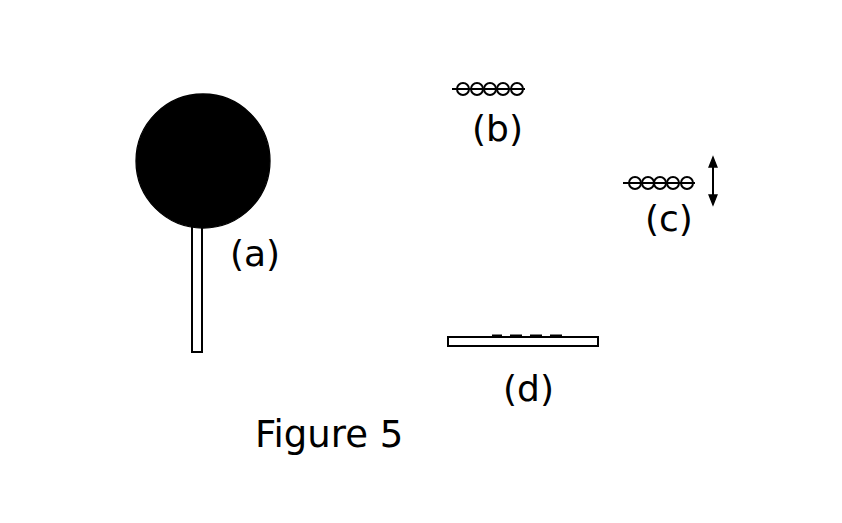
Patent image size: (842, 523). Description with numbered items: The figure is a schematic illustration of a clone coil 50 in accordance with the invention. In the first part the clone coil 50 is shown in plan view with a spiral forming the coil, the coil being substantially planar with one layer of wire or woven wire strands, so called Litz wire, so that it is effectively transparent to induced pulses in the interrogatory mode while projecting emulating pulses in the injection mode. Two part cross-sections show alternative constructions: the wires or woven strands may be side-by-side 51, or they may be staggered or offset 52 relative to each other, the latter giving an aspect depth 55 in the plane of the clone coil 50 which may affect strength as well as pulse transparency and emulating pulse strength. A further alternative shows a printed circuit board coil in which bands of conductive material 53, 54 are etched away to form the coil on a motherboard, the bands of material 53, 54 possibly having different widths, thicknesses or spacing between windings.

The clone coil 50 is at (248, 110).
The side-by-side wires 51 is at (520, 88).
The staggered/offset wires 52 is at (688, 178).
The band of conductive material 53 is at (560, 335).
The band of conductive material 54 is at (583, 350).
The aspect depth 55 is at (718, 182).